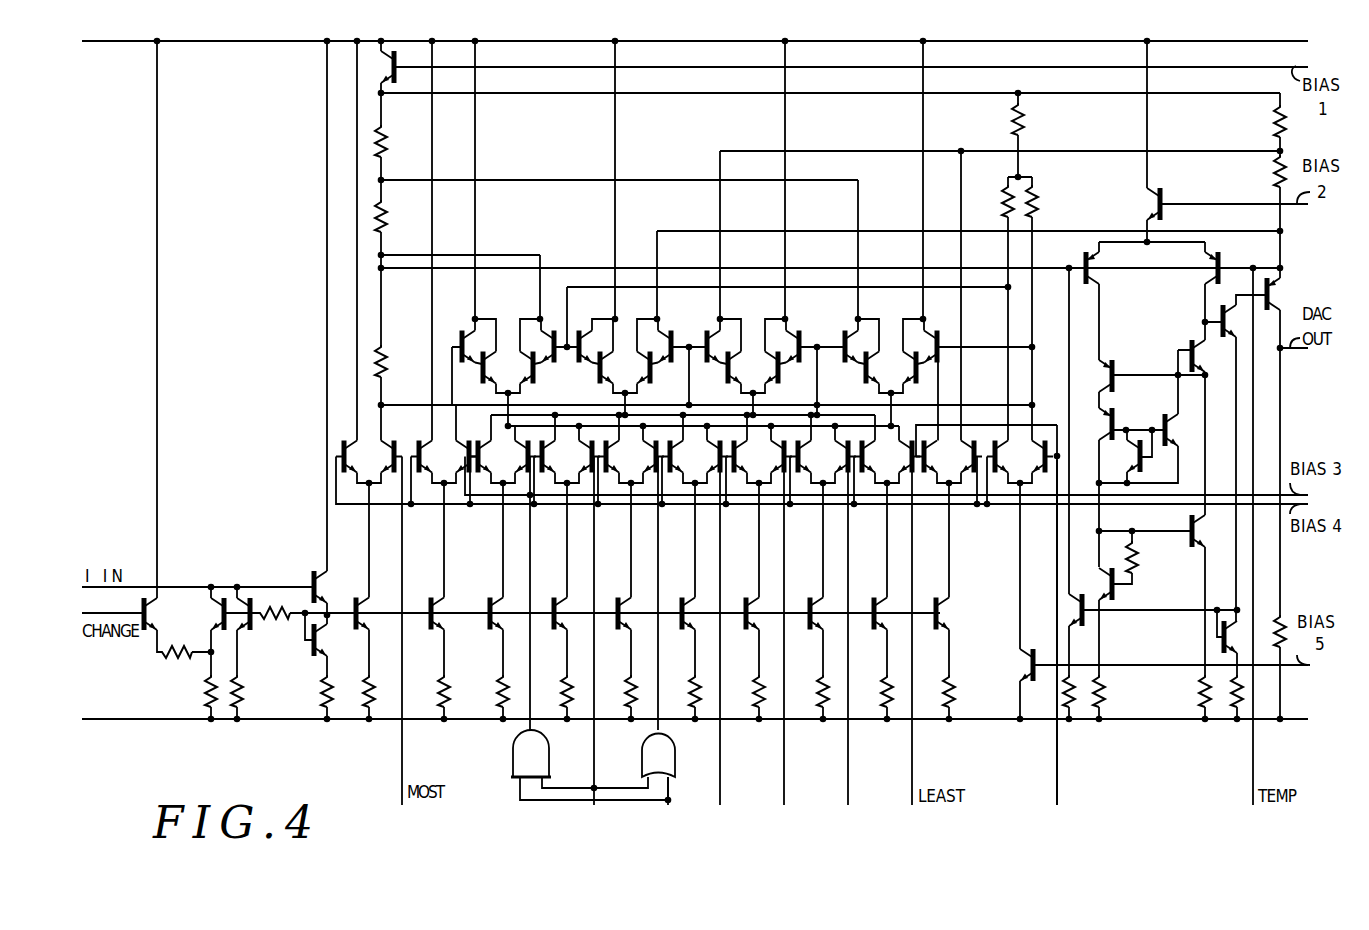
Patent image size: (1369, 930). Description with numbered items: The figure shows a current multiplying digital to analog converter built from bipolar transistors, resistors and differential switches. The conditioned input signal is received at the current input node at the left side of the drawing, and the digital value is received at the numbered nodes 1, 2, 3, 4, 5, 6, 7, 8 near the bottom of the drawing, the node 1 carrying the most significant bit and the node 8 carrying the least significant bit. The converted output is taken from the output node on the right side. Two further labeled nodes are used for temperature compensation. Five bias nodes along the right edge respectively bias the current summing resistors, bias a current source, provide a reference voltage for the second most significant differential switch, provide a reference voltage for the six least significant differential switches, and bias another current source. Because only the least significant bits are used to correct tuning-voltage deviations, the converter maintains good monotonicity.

The numbered node 1 is at (403, 642).
The numbered node 2 is at (1057, 643).
The numbered node 3 is at (594, 642).
The numbered node 4 is at (668, 802).
The numbered node 5 is at (720, 642).
The numbered node 6 is at (784, 642).
The numbered node 7 is at (848, 642).
The numbered node 8 is at (912, 642).